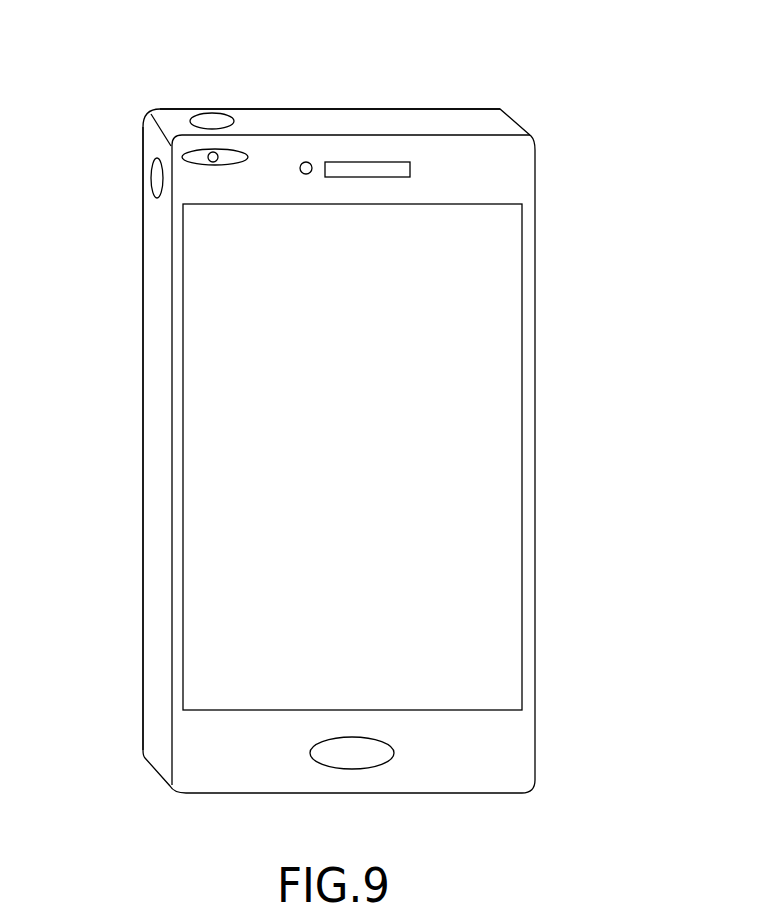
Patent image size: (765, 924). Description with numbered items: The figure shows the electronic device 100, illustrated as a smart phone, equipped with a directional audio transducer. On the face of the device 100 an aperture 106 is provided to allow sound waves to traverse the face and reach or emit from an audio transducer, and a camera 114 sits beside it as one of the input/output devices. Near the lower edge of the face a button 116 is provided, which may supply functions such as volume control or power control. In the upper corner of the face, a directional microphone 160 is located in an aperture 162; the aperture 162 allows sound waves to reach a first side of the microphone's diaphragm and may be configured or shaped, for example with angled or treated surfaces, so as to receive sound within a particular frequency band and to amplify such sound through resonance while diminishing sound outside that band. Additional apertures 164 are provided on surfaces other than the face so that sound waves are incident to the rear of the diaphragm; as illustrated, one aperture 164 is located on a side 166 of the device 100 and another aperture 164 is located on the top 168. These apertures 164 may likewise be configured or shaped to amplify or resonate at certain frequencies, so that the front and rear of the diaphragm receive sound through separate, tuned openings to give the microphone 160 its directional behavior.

The electronic device 100 is at (593, 130).
The aperture 106 is at (395, 162).
The camera 114 is at (311, 163).
The button 116 is at (394, 752).
The directional microphone 160 is at (216, 155).
The aperture 162 is at (240, 161).
The additional apertures 164 is at (214, 120).
The side 166 is at (148, 143).
The top 168 is at (178, 112).